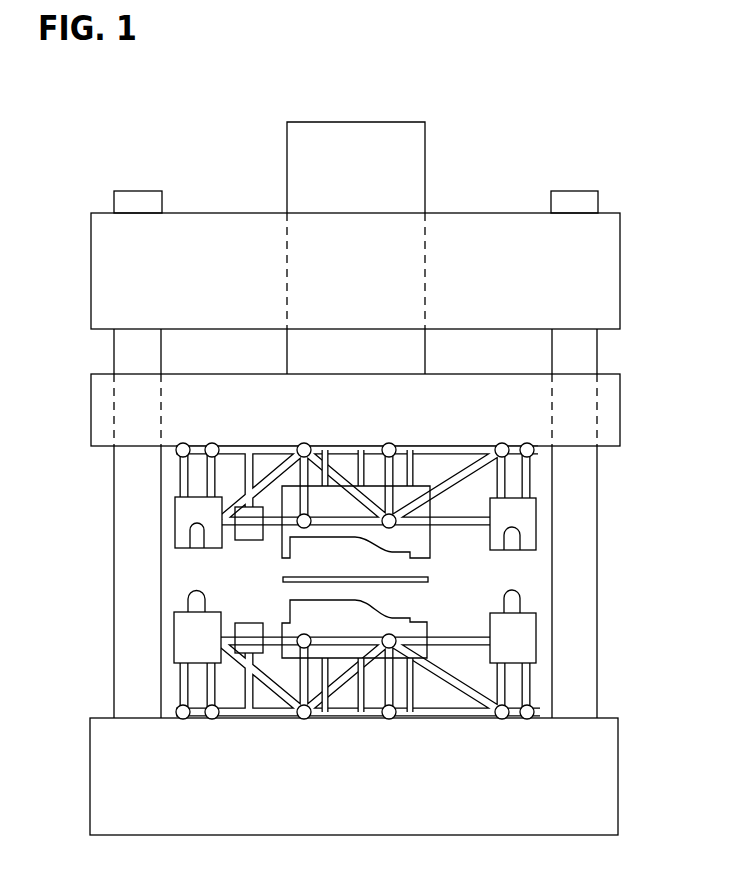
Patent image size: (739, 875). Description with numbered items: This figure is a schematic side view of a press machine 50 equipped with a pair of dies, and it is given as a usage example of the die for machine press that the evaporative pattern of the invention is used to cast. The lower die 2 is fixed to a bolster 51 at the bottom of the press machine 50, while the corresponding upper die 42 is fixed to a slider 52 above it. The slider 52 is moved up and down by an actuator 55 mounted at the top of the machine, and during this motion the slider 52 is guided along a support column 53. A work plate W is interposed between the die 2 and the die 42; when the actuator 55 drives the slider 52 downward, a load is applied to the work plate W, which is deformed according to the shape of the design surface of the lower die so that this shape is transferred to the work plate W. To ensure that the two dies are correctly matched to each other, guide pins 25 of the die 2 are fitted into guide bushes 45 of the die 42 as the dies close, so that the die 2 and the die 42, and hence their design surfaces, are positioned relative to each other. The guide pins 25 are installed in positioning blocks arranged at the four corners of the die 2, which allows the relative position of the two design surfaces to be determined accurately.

The press machine 50 is at (583, 101).
The actuator 55 is at (410, 156).
The support column 53 is at (587, 352).
The slider 52 is at (607, 410).
The bolster 51 is at (605, 773).
The die 2 is at (522, 585).
The work plate W is at (283, 578).
The guide bush 45 is at (197, 549).
The die 42 is at (517, 556).
The guide pin 25 is at (190, 598).